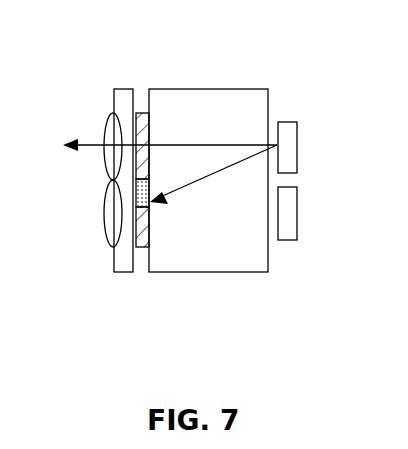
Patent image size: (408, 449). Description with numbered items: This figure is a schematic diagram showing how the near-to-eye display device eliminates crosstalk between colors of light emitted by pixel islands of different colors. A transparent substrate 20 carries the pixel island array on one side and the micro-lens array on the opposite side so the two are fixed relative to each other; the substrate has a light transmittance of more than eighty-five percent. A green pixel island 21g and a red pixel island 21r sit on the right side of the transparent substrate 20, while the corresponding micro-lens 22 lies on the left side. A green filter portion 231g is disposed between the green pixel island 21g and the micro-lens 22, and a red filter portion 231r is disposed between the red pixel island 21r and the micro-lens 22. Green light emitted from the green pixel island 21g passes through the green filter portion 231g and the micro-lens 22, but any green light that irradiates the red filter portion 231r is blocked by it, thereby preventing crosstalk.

The transparent substrate 20 is at (245, 272).
The micro-lens 22 is at (103, 127).
The green filter portion 231g is at (138, 113).
The red filter portion 231r is at (143, 250).
The green pixel island 21g is at (288, 121).
The red pixel island 21r is at (293, 240).